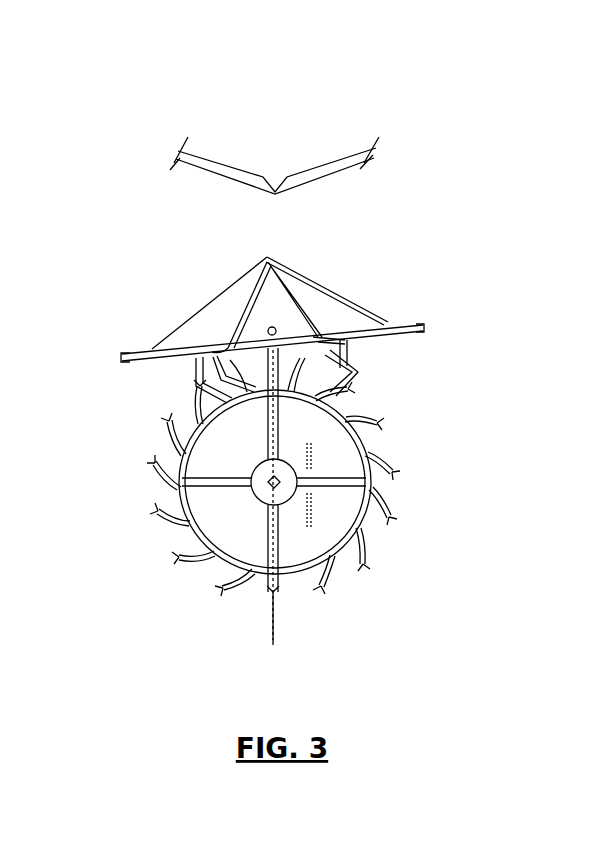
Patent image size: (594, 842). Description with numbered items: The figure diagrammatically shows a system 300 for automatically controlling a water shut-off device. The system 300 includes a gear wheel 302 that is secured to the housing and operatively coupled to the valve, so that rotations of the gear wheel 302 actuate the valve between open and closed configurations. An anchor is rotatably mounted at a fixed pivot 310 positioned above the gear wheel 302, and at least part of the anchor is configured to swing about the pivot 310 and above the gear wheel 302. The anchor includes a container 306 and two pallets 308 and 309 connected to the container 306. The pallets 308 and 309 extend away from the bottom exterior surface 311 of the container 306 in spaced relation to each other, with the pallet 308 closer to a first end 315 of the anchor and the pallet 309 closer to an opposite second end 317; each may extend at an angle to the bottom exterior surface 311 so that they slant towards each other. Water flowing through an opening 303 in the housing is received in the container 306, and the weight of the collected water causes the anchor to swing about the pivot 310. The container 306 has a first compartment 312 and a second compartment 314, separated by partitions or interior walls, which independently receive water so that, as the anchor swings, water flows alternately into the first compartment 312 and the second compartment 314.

The system 300 is at (415, 240).
The gear wheel 302 is at (340, 560).
The opening 303 is at (275, 188).
The container 306 is at (315, 278).
The pallet 308 is at (202, 371).
The pallet 309 is at (350, 370).
The pivot 310 is at (268, 329).
The bottom exterior surface 311 is at (395, 466).
The first compartment 312 is at (190, 336).
The second compartment 314 is at (426, 328).
The first end 315 is at (123, 365).
The second end 317 is at (407, 333).